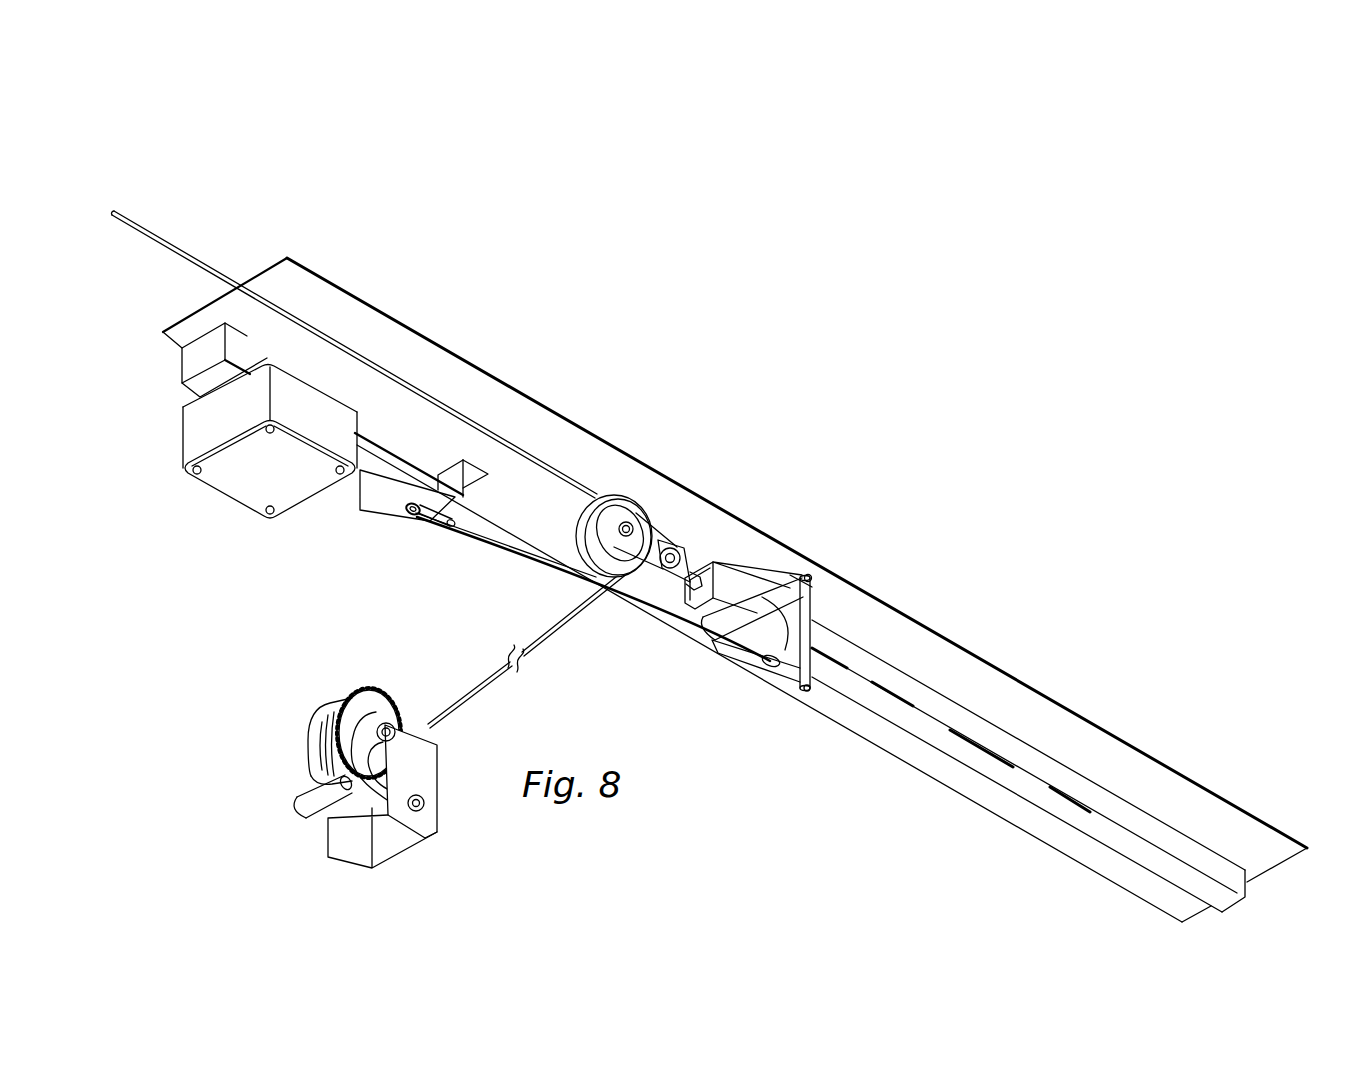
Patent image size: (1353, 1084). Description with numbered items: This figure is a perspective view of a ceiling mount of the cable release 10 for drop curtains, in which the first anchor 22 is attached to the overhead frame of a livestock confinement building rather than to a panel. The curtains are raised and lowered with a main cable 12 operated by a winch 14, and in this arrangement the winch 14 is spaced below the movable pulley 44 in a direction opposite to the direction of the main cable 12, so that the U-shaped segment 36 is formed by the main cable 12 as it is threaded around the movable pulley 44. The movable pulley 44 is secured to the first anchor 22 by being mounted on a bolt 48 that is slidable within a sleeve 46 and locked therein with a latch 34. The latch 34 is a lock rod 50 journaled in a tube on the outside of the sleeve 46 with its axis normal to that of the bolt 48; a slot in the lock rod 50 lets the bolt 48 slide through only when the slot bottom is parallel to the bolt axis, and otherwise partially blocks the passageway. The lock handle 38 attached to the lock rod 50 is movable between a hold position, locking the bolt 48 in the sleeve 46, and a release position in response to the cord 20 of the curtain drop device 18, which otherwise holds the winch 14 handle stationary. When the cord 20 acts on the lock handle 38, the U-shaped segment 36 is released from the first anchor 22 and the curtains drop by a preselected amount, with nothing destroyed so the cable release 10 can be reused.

The cable release 10 is at (623, 332).
The main cable 12 is at (318, 329).
The winch 14 is at (440, 770).
The curtain drop device 18 is at (232, 516).
The release cord 20 is at (628, 593).
The first anchor 22 is at (694, 528).
The latch 34 is at (795, 561).
The U-shaped segment of cable 36 is at (542, 492).
The lock handle 38 is at (810, 635).
The movable pulley 44 is at (614, 497).
The sleeve 46 is at (730, 582).
The bolt 48 is at (975, 730).
The lock rod 50 is at (790, 668).